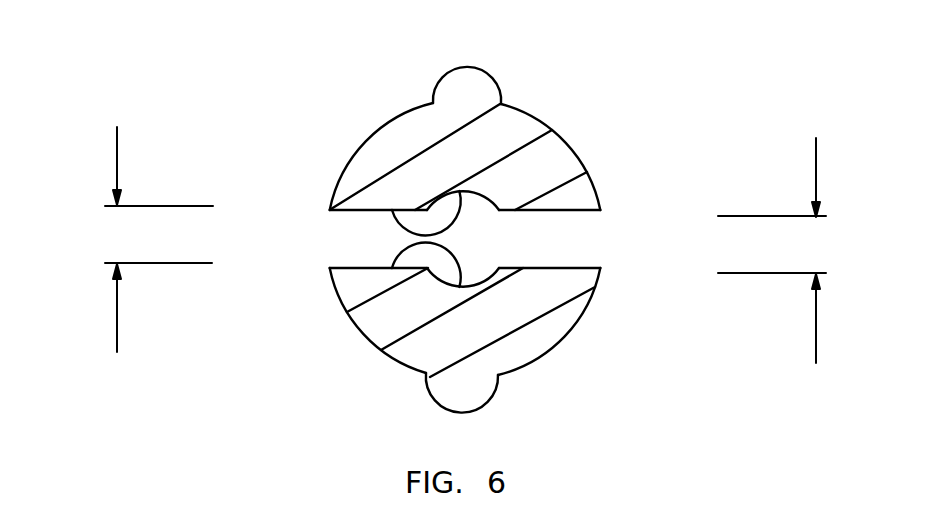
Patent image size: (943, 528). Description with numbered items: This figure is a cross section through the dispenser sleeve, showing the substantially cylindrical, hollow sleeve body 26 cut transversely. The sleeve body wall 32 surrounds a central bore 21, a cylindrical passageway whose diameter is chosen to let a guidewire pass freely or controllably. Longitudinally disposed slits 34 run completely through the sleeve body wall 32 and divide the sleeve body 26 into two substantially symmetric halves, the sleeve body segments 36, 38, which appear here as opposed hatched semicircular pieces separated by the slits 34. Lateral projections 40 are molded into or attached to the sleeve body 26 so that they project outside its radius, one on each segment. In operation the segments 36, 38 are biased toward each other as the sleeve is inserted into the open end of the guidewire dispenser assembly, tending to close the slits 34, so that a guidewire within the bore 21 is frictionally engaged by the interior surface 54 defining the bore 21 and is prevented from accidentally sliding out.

The bore 21 is at (465, 240).
The sleeve body 26 is at (383, 378).
The sleeve body wall 32 is at (520, 120).
The slits 34 is at (370, 237).
The sleeve body segment 36 is at (560, 320).
The sleeve body segment 38 is at (393, 120).
The lateral projections 40 is at (478, 70).
The interior surface 54 is at (411, 231).